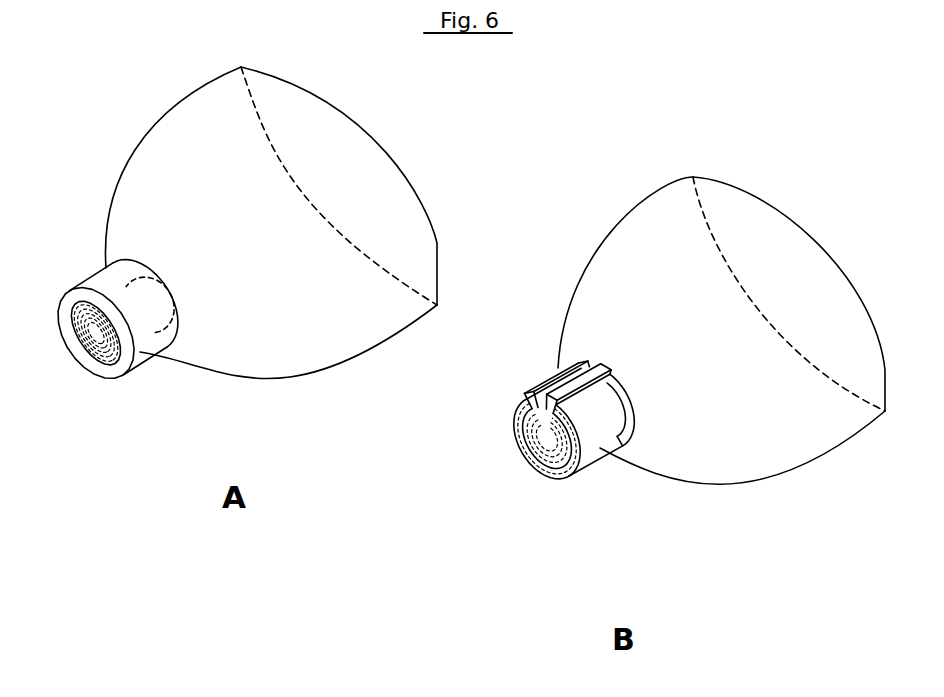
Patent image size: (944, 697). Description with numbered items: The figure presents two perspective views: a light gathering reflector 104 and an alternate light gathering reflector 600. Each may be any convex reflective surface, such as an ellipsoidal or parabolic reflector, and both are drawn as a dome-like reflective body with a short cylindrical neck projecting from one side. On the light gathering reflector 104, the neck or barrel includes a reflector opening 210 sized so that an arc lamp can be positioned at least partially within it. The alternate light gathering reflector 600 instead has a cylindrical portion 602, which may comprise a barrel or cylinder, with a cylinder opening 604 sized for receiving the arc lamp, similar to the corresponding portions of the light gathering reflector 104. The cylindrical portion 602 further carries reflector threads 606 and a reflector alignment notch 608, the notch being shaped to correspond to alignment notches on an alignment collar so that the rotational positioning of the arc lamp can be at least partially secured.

In FIG. 6A, the light gathering reflector 104 is at (136, 140).
In FIG. 6A, the reflector opening 210 is at (50, 308).
In FIG. 6B, the alternate light gathering reflector 600 is at (629, 201).
In FIG. 6B, the cylindrical portion 602 is at (597, 473).
In FIG. 6B, the cylinder opening 604 is at (547, 489).
In FIG. 6B, the reflector threads 606 is at (527, 403).
In FIG. 6B, the reflector alignment notch 608 is at (584, 357).